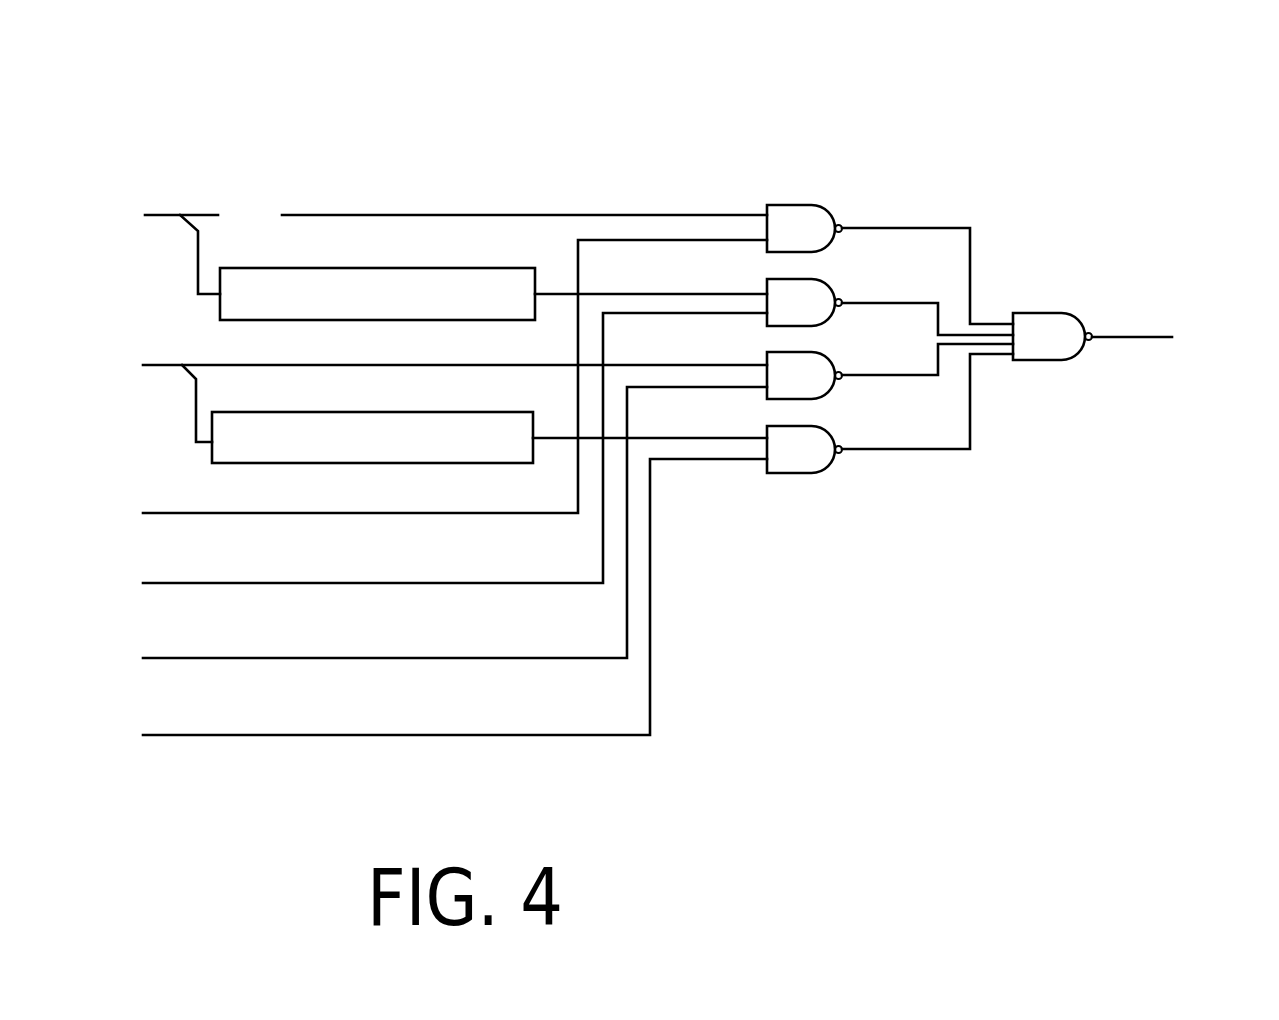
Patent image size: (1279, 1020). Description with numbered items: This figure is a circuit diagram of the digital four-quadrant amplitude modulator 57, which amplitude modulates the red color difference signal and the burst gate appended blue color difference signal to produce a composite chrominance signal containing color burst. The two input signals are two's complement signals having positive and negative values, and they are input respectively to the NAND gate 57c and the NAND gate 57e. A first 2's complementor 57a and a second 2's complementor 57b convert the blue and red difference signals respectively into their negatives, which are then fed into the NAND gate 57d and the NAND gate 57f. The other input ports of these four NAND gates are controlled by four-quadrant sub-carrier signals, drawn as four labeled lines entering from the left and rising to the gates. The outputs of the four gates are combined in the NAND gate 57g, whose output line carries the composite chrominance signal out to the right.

The amplitude modulator 57 is at (1053, 208).
The first 2's complementor 57a is at (470, 278).
The second 2's complementor 57b is at (468, 430).
The NAND gate 57c is at (793, 223).
The NAND gate 57d is at (820, 298).
The NAND gate 57e is at (823, 374).
The NAND gate 57f is at (820, 450).
The NAND gate 57g is at (1055, 353).